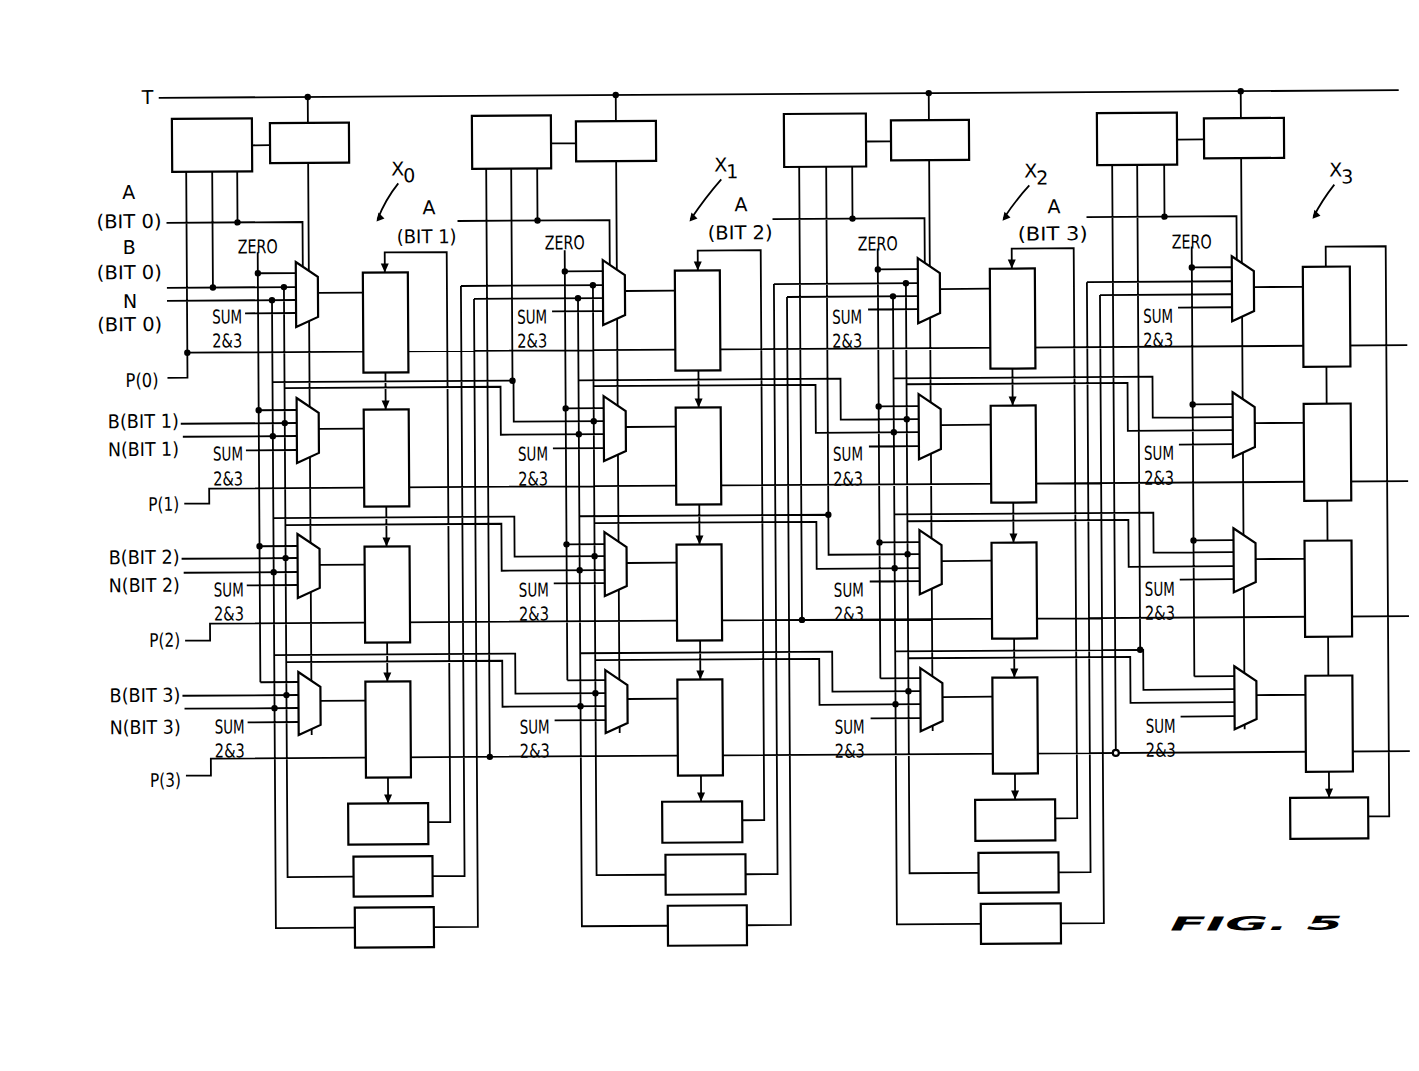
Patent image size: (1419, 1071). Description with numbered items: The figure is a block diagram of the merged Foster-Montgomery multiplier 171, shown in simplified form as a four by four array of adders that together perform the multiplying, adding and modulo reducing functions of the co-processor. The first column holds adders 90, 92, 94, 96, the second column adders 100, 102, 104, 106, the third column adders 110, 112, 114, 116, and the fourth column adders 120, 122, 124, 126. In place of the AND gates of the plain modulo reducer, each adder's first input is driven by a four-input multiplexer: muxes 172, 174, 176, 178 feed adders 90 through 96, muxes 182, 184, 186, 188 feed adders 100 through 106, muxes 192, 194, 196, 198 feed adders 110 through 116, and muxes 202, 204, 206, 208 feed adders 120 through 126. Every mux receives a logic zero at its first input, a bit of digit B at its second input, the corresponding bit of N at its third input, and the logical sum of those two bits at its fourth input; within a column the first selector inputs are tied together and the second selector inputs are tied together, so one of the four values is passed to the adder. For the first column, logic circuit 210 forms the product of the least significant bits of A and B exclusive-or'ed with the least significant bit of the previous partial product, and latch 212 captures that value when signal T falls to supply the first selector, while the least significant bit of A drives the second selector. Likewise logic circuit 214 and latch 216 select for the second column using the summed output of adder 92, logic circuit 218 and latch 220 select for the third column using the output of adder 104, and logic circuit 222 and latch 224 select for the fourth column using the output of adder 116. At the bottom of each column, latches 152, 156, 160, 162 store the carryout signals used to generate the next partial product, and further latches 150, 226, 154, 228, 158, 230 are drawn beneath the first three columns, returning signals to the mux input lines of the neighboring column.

The adder 90 is at (408, 298).
The adder 92 is at (408, 428).
The adder 94 is at (408, 565).
The adder 96 is at (408, 702).
The adder 100 is at (720, 300).
The adder 102 is at (720, 430).
The adder 104 is at (720, 567).
The adder 106 is at (720, 702).
The adder 110 is at (1035, 300).
The adder 112 is at (1035, 431).
The adder 114 is at (1035, 568).
The adder 116 is at (1035, 703).
The adder 120 is at (1303, 306).
The adder 122 is at (1303, 441).
The adder 124 is at (1303, 578).
The adder 126 is at (1303, 716).
The latch 150 is at (350, 861).
The latch 152 is at (345, 807).
The latch 154 is at (662, 861).
The latch 156 is at (659, 807).
The latch 158 is at (975, 863).
The latch 160 is at (972, 808).
The latch 162 is at (1287, 826).
The merged Foster-Montgomery multiplier 171 is at (1192, 871).
The multiplexer 172 is at (318, 275).
The multiplexer 174 is at (318, 431).
The multiplexer 176 is at (318, 567).
The multiplexer 178 is at (318, 703).
The multiplexer 182 is at (625, 280).
The multiplexer 184 is at (625, 431).
The multiplexer 186 is at (625, 567).
The multiplexer 188 is at (625, 703).
The multiplexer 192 is at (940, 281).
The multiplexer 194 is at (940, 431).
The multiplexer 196 is at (940, 567).
The multiplexer 198 is at (940, 703).
The multiplexer 202 is at (1254, 281).
The multiplexer 204 is at (1254, 418).
The multiplexer 206 is at (1254, 554).
The multiplexer 208 is at (1254, 690).
The logic circuit 210 is at (173, 152).
The latch 212 is at (350, 141).
The logic circuit 214 is at (473, 152).
The latch 216 is at (657, 141).
The logic circuit 218 is at (785, 148).
The latch 220 is at (970, 141).
The logic circuit 222 is at (1098, 148).
The latch 224 is at (1285, 139).
The latch 226 is at (351, 913).
The latch 228 is at (664, 913).
The latch 230 is at (977, 915).